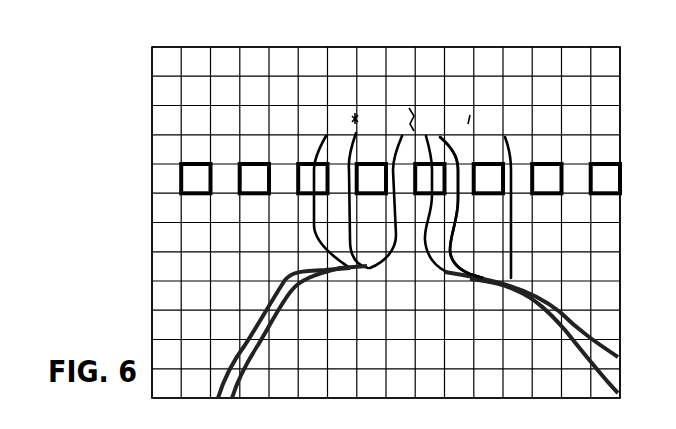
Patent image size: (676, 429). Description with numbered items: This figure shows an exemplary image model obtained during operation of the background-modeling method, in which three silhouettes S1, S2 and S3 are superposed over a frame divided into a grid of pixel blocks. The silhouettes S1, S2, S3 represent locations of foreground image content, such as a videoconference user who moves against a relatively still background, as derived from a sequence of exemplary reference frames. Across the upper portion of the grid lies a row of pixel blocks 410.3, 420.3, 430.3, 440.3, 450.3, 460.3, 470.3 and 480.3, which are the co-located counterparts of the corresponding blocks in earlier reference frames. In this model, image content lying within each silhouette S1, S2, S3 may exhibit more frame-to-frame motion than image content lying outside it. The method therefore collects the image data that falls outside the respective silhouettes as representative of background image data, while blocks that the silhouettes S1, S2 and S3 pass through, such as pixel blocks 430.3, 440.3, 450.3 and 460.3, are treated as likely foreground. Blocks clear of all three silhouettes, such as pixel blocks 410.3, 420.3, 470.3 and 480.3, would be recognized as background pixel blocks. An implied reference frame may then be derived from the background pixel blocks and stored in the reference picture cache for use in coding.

The pixel block 410.3 is at (191, 160).
The pixel block 420.3 is at (249, 160).
The pixel block 430.3 is at (306, 160).
The pixel block 440.3 is at (369, 160).
The pixel block 450.3 is at (423, 160).
The pixel block 460.3 is at (483, 160).
The pixel block 470.3 is at (542, 160).
The pixel block 480.3 is at (600, 160).
The silhouette S1 is at (572, 300).
The silhouette S2 is at (458, 284).
The silhouette S3 is at (460, 236).